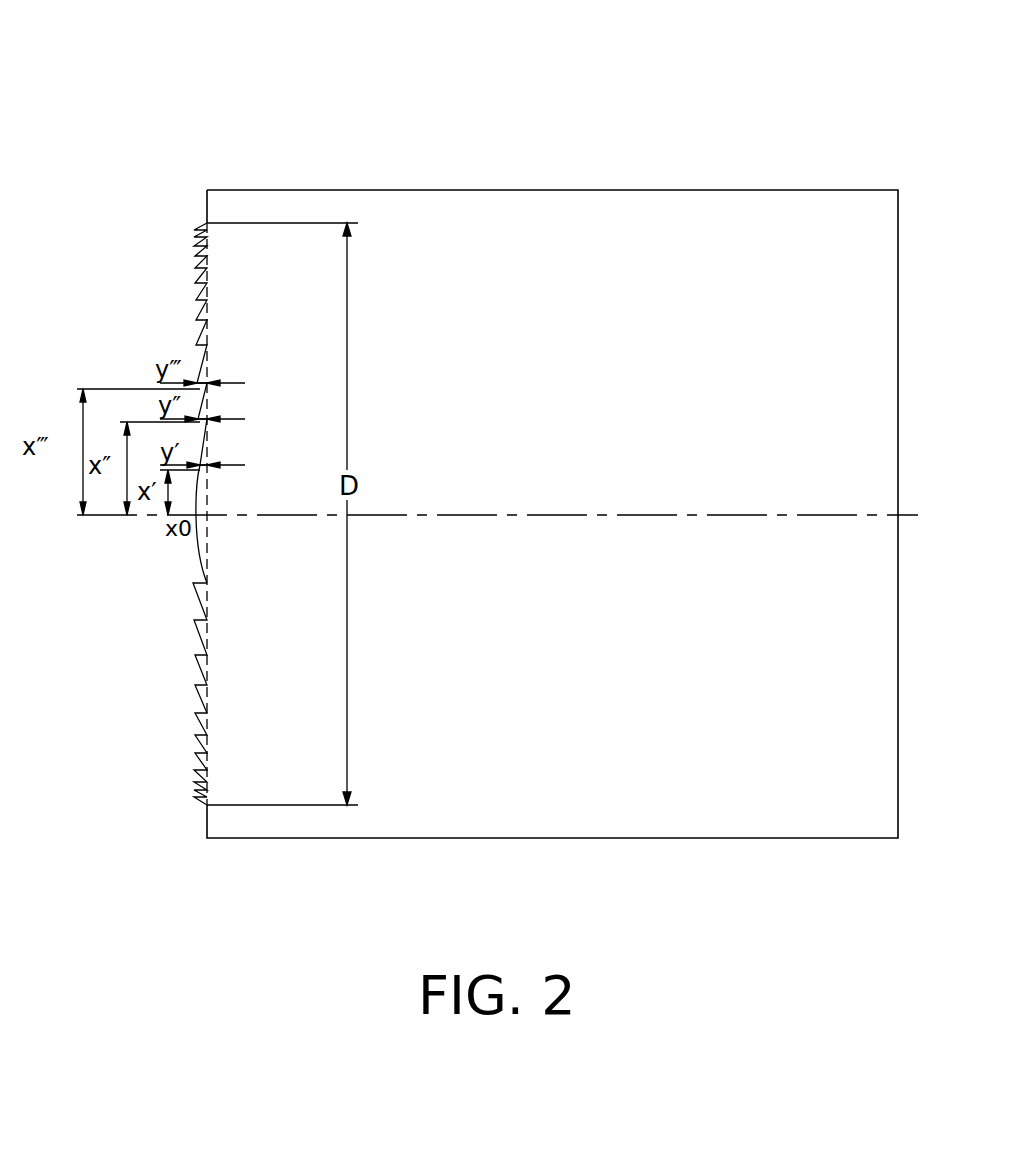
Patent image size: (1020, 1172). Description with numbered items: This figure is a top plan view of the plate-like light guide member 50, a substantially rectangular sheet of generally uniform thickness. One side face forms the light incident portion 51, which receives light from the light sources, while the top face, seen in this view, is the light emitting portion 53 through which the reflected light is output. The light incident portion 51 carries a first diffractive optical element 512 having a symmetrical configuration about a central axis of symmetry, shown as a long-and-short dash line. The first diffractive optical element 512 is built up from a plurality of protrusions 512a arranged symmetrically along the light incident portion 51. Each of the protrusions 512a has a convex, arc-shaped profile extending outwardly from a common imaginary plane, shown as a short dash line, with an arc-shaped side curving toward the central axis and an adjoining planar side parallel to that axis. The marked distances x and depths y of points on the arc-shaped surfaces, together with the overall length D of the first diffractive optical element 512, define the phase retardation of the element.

The light guide member (LGP) 50 is at (548, 40).
The light emitting portion 53 is at (510, 230).
The light incident portion 51 is at (207, 822).
The first diffractive optical element 512 is at (195, 693).
The protrusions 512a is at (195, 584).